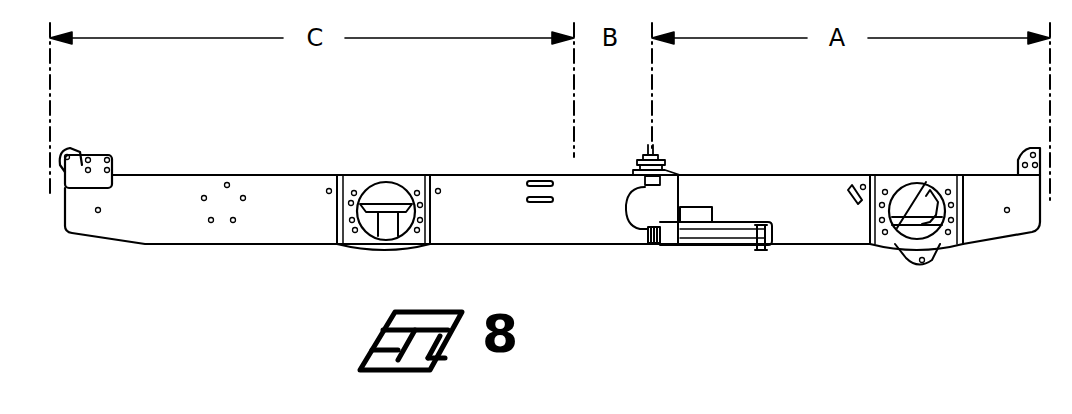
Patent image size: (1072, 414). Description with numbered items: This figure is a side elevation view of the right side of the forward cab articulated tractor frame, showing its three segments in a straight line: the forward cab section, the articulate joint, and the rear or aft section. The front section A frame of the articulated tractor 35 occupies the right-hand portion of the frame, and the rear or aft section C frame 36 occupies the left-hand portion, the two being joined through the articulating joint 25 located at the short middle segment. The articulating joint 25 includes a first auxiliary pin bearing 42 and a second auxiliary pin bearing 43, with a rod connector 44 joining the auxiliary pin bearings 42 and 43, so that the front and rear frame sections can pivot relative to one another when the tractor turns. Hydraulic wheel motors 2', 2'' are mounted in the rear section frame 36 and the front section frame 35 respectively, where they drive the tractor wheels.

The hydraulic wheel motor 2' is at (367, 230).
The hydraulic wheel motor 2'' is at (932, 230).
The articulating joint 25 is at (652, 155).
The side elevation view of front section A frame 35 is at (765, 185).
The side elevation view of rear or aft section C frame 36 is at (472, 185).
The first auxiliary pin bearing 42 is at (762, 248).
The second auxiliary pin bearing 43 is at (645, 246).
The rod connector 44 is at (725, 240).